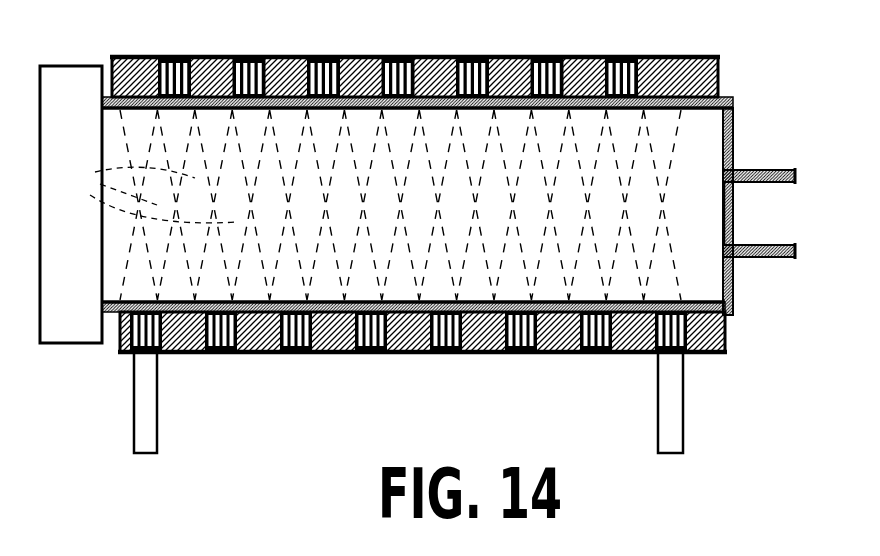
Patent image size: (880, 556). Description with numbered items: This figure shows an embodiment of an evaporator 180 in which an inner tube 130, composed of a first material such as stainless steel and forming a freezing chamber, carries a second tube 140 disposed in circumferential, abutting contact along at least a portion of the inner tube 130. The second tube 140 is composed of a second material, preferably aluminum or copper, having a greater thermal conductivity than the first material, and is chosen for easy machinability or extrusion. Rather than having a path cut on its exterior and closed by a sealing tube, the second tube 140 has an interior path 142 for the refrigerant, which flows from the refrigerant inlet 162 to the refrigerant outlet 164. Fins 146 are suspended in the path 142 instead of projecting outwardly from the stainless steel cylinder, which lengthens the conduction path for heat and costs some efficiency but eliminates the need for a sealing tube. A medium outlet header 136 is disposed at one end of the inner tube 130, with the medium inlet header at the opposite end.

The inner tube 130 is at (731, 108).
The medium outlet header 136 is at (735, 147).
The second tube 140 is at (510, 58).
The interior path 142 is at (670, 37).
The fins 146 is at (325, 57).
The refrigerant inlet 162 is at (152, 410).
The refrigerant outlet 164 is at (673, 418).
The evaporator 180 is at (390, 34).